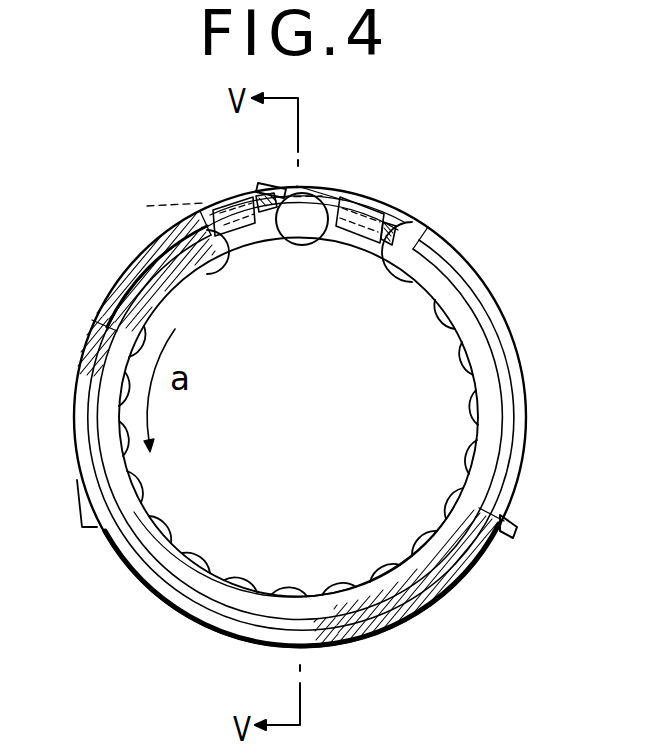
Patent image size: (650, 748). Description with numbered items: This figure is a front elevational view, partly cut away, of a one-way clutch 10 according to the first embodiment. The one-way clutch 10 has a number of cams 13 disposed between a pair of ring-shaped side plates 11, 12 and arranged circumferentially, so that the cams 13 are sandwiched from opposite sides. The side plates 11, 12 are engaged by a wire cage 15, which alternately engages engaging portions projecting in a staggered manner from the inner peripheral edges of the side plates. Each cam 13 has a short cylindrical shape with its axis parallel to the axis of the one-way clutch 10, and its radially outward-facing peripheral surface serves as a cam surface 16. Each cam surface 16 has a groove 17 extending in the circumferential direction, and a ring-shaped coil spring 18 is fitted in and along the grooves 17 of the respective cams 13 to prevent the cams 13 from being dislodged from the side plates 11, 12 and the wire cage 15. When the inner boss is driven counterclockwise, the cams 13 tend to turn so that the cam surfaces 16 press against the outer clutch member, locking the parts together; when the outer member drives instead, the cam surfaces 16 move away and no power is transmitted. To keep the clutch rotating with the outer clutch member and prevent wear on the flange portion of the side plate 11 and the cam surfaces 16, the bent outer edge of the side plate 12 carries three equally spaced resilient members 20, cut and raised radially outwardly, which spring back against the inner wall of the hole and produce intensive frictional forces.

The one-way clutch 10 is at (487, 278).
The side plate 11 is at (118, 330).
The side plate 12 is at (395, 218).
The cam 13 is at (302, 244).
The wire cage 15 is at (389, 238).
The cam surface 16 is at (257, 197).
The groove 17 is at (216, 230).
The ring-shaped coil spring 18 is at (342, 198).
The resilient member 20 is at (258, 172).